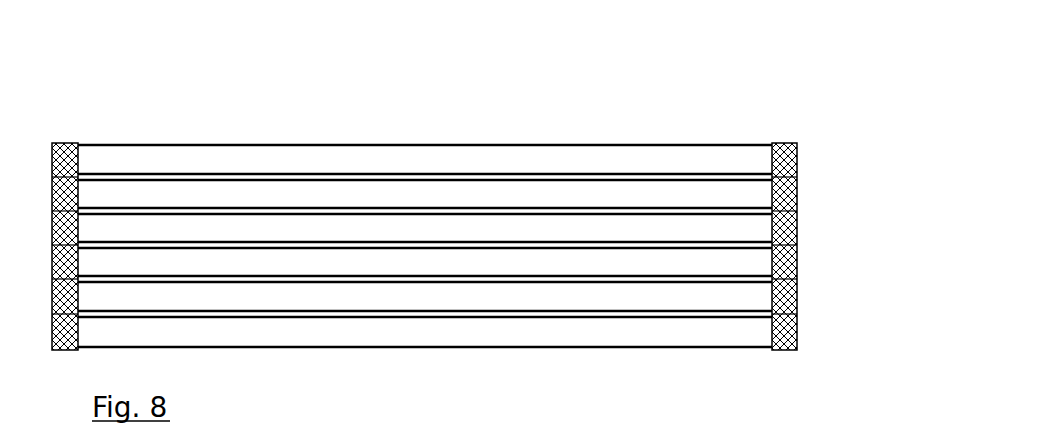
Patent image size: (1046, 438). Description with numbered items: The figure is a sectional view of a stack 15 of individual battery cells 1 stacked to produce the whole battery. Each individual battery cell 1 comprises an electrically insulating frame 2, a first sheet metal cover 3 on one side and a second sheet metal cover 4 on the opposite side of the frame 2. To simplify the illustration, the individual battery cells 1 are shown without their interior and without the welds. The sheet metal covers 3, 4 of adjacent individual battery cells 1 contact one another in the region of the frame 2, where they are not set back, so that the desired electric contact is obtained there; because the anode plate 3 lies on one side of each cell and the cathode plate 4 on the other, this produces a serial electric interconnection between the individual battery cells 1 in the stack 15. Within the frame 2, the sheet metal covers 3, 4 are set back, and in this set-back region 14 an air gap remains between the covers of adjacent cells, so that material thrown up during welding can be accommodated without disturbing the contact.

The individual battery cell 1 is at (759, 249).
The electrically insulating frame 2 is at (798, 244).
The first sheet metal cover 3 is at (270, 243).
The second sheet metal cover 4 is at (422, 243).
The set-back region 14 is at (535, 213).
The stack 15 is at (135, 114).